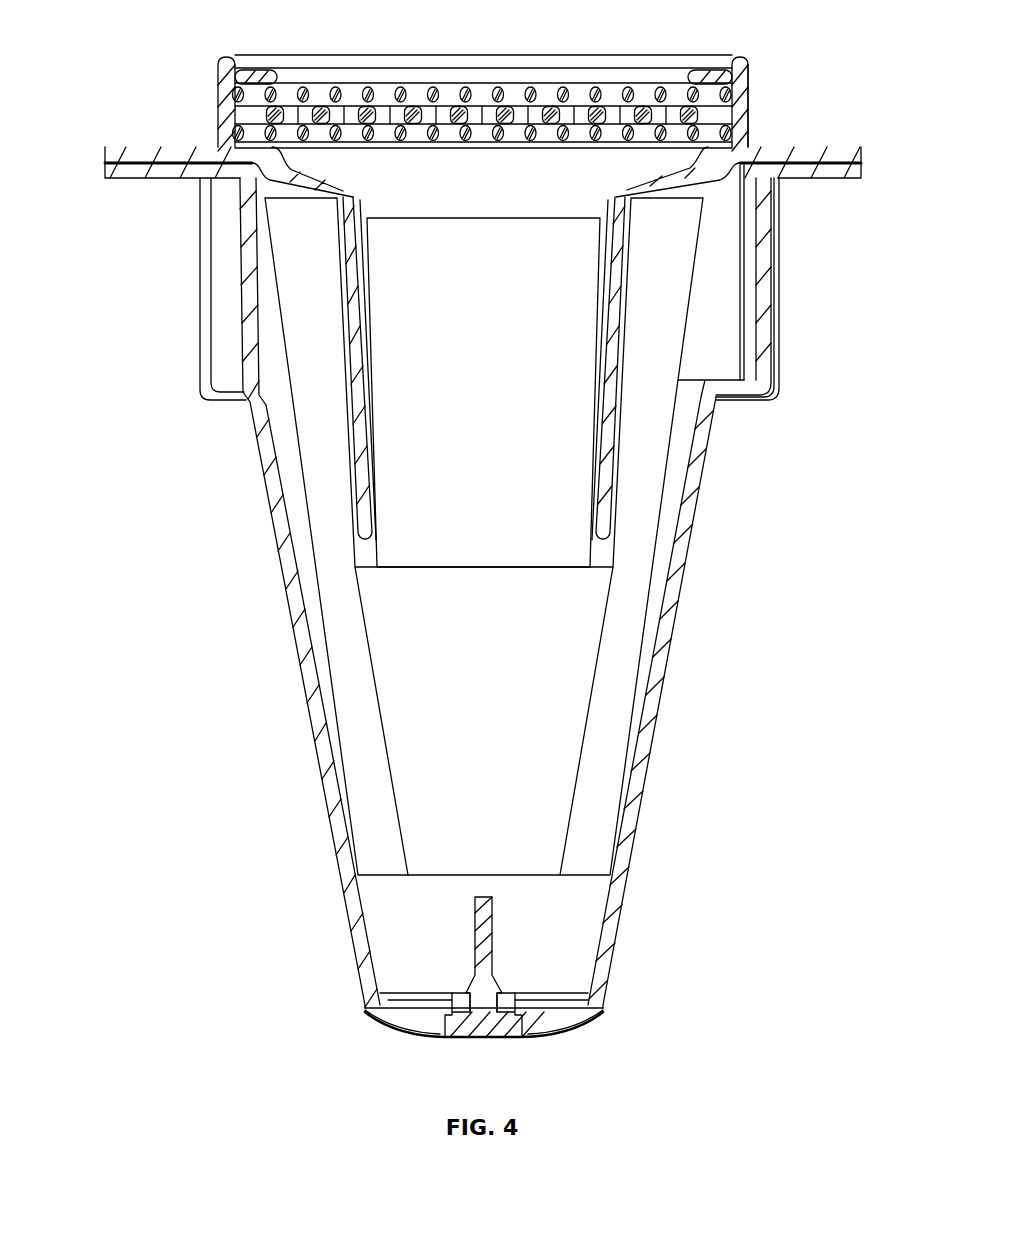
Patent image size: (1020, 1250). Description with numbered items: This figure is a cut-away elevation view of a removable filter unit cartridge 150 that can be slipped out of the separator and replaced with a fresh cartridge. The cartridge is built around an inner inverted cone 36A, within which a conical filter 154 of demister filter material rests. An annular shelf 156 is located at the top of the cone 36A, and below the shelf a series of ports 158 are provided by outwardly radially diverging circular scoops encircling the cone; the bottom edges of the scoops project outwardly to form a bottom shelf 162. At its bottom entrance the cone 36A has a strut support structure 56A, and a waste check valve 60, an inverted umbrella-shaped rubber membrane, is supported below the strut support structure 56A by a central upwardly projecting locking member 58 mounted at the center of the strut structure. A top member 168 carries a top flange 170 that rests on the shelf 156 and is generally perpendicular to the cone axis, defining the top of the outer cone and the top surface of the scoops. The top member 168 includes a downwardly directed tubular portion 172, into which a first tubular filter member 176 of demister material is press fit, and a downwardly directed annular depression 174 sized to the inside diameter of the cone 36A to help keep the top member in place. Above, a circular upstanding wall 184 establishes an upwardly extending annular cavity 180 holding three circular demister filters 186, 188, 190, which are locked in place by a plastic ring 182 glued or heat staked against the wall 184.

The inner inverted cone 36A is at (312, 713).
The strut support structure 56A is at (542, 997).
The central upwardly projecting locking member 58 is at (487, 993).
The waste check valve 60 is at (482, 1023).
The removable filter unit cartridge 150 is at (234, 640).
The conical filter 154 is at (623, 638).
The annular shelf 156 is at (150, 172).
The ports 158 is at (230, 283).
The bottom shelf 162 is at (752, 400).
The top member 168 is at (363, 540).
The top flange 170 is at (840, 158).
The downwardly directed tubular portion 172 is at (357, 367).
The downwardly directed annular depression 174 is at (270, 175).
The first tubular filter member 176 is at (530, 543).
The upwardly extending annular cavity 180 is at (479, 74).
The plastic ring 182 is at (300, 76).
The circular upstanding wall 184 is at (742, 92).
The circular demister filter 186 is at (236, 100).
The circular demister filter 188 is at (268, 118).
The circular demister filter 190 is at (236, 134).